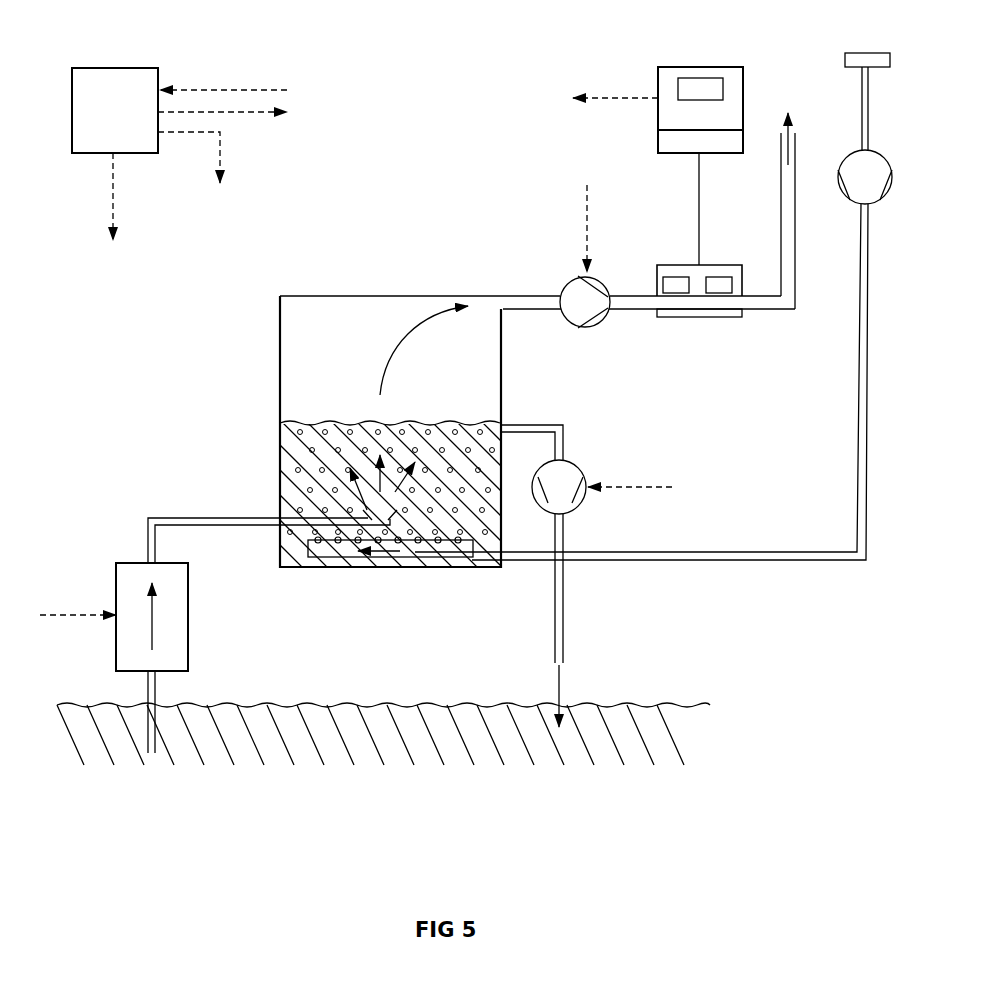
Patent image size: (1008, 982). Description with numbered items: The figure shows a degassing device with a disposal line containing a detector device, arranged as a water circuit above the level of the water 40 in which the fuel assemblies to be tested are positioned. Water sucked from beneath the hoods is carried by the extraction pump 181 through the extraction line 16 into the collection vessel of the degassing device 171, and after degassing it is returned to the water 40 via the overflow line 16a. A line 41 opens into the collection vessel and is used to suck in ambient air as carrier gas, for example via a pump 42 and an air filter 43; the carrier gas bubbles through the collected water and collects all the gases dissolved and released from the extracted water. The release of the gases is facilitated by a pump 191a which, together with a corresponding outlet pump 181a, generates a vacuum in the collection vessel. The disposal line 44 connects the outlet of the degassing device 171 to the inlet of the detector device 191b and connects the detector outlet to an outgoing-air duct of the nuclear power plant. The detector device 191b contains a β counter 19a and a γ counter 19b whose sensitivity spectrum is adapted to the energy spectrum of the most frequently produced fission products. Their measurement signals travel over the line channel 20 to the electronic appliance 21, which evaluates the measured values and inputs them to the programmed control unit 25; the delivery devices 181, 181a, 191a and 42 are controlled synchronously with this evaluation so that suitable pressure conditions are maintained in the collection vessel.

The control unit 25 is at (98, 68).
The electronic appliance 21 is at (687, 67).
The line channel 20 is at (699, 193).
The β counter 19a is at (672, 282).
The γ counter 19b is at (720, 282).
The disposal line 44 is at (522, 299).
The pump 191a is at (585, 328).
The detector device 191b is at (672, 318).
The air filter 43 is at (850, 53).
The pump 42 is at (881, 196).
The line 41 is at (786, 552).
The outlet pump 181a is at (585, 468).
The overflow line 16a is at (563, 618).
The water 40 is at (673, 716).
The extraction line 16 is at (198, 518).
The extraction pump 181 is at (188, 620).
The degassing device 171 is at (368, 568).